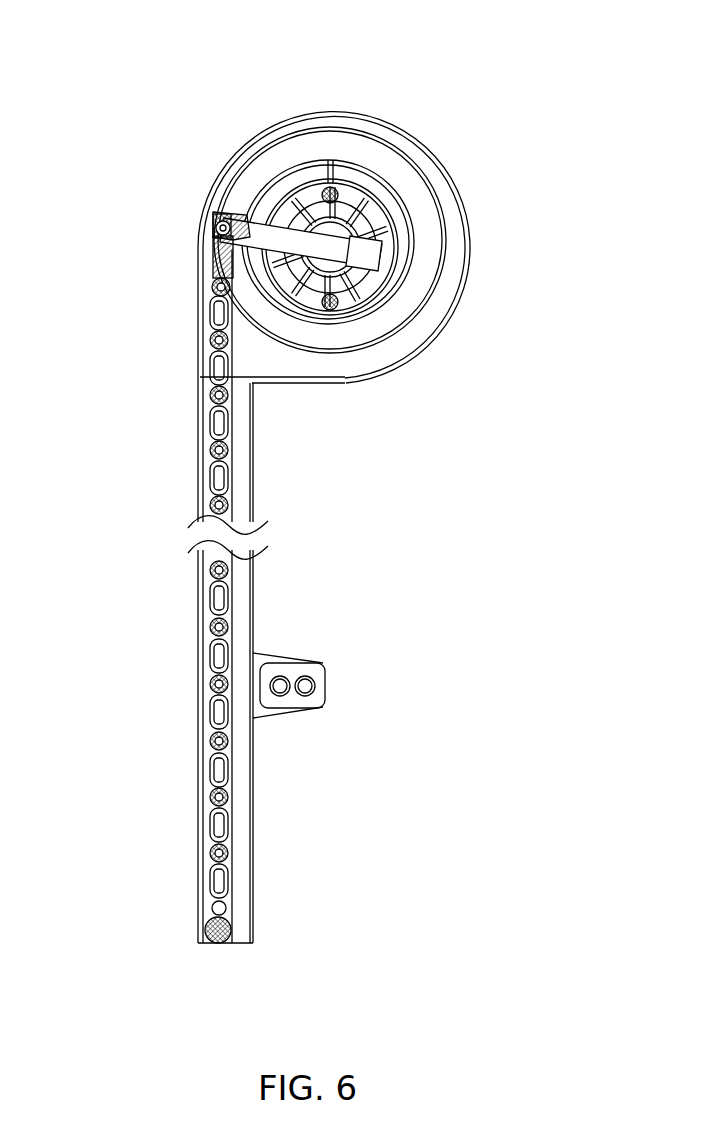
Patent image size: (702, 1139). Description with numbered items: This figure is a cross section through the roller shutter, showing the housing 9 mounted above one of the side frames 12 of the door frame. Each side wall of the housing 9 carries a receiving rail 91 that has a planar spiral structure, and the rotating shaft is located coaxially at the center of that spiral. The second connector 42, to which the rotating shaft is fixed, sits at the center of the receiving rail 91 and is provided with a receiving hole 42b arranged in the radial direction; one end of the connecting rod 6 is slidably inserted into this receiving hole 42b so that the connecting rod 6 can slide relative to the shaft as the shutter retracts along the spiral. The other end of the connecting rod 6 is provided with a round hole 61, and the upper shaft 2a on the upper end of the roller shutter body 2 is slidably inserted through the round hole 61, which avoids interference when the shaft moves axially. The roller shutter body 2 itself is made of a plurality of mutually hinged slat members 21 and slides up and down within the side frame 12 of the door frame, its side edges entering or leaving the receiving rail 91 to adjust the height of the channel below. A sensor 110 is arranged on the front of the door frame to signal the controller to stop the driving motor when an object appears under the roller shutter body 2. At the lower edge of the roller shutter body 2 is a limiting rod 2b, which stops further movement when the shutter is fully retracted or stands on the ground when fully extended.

The housing 9 is at (320, 112).
The receiving rail 91 is at (367, 148).
The second connector 42 is at (365, 195).
The receiving hole 42b is at (380, 257).
The connecting rod 6 is at (233, 215).
The round hole 61 is at (217, 223).
The upper shaft 2a is at (217, 232).
The slat member 21 is at (213, 425).
The side frame 12 is at (252, 470).
The roller shutter body 2 is at (154, 575).
The sensor 110 is at (315, 686).
The limiting rod 2b is at (205, 933).